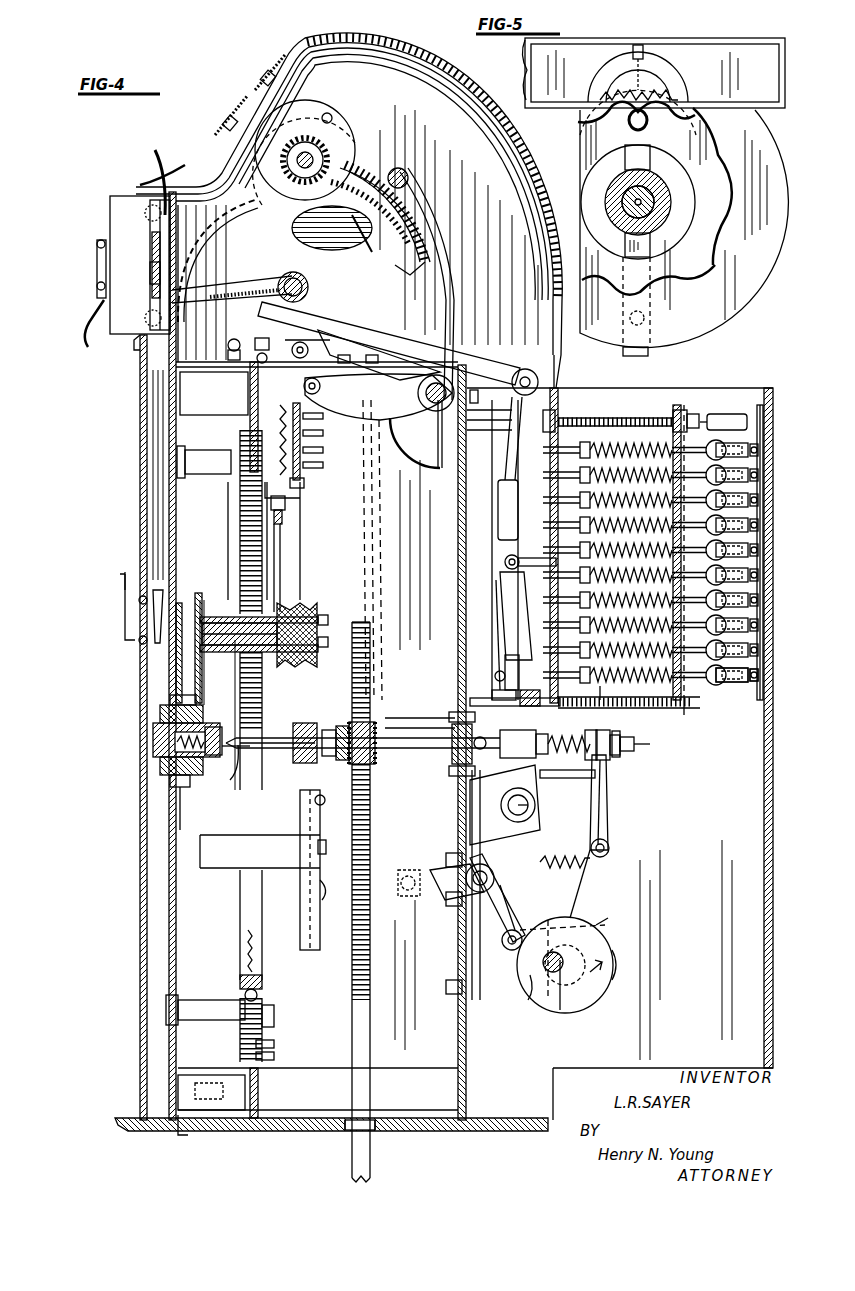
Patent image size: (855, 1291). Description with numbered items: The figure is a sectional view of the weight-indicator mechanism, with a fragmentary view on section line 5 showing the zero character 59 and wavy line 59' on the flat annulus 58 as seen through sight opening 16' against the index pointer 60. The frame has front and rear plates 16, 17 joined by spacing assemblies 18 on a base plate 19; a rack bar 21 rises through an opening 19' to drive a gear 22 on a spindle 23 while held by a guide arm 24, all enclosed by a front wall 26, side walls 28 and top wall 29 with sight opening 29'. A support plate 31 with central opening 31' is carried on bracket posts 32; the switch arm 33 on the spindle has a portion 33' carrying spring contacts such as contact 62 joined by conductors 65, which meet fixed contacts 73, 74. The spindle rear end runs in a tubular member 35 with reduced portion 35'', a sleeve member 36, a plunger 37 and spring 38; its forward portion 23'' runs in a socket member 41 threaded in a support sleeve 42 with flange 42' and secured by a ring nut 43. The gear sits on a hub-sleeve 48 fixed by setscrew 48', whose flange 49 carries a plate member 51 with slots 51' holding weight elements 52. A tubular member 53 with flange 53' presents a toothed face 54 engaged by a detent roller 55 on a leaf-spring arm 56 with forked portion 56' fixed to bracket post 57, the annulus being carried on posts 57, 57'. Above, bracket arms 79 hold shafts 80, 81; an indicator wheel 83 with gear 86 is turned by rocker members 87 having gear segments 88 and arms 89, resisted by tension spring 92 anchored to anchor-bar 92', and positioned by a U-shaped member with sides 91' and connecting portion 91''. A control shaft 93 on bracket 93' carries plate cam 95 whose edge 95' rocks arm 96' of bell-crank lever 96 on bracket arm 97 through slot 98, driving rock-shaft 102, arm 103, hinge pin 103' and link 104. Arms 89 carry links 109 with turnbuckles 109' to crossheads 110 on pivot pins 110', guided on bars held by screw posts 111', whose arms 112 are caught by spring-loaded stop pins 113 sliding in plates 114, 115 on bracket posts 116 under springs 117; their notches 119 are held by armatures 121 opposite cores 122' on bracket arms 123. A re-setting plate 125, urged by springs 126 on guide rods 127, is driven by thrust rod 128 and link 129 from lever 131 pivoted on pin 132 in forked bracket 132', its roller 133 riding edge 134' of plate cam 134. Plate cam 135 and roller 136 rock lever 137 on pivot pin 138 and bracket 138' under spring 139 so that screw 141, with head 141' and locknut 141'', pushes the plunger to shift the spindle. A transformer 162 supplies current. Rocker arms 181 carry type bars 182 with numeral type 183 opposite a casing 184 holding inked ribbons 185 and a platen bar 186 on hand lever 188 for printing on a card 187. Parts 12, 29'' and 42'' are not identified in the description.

In FIG. 4, the section line 5— 5 is at (123, 576).
In FIG. 4, the main shaft 12 is at (135, 742).
In FIG. 4, the front frame plate 16 is at (134, 656).
In FIG. 5, the front frame plate 16 is at (653, 60).
In FIG. 4, the sight opening 16' is at (136, 646).
In FIG. 4, the rear frame plate 17 is at (458, 1050).
In FIG. 4, the spacing assemblies 18 is at (224, 403).
In FIG. 4, the base plate 19 is at (331, 1142).
In FIG. 4, the opening of the base plate 19' is at (341, 1143).
In FIG. 4, the rack bar 21 is at (362, 890).
In FIG. 4, the gear 22 is at (371, 902).
In FIG. 4, the spindle 23 is at (448, 756).
In FIG. 4, the reduced forward portion of the spindle 23'' is at (230, 772).
In FIG. 4, the guide arm 24 is at (422, 726).
In FIG. 4, the front wall 26 is at (140, 660).
In FIG. 5, the front wall 26 is at (764, 59).
In FIG. 4, the side walls 28 is at (710, 839).
In FIG. 4, the top wall 29 is at (349, 206).
In FIG. 4, the sight opening 29' is at (220, 113).
In FIG. 4, the cover fastening 29'' is at (264, 68).
In FIG. 4, the support plate 31 is at (214, 1136).
In FIG. 4, the central opening of the support plate 31' is at (220, 951).
In FIG. 4, the bracket posts 32 is at (216, 469).
In FIG. 4, the switch arm 33 is at (290, 622).
In FIG. 5, the switch arm 33 is at (638, 202).
In FIG. 4, the portion of the switch arm 33' is at (306, 485).
In FIG. 4, the tubular member 35 is at (447, 744).
In FIG. 4, the reduced rearward portion of the tubular member 35'' is at (483, 728).
In FIG. 4, the sleeve member 36 is at (510, 730).
In FIG. 4, the plunger 37 is at (601, 752).
In FIG. 4, the helical compression spring 38 is at (569, 759).
In FIG. 4, the socket member 41 is at (153, 745).
In FIG. 5, the socket member 41 is at (633, 205).
In FIG. 4, the support sleeve 42 is at (154, 739).
In FIG. 5, the support sleeve 42 is at (648, 286).
In FIG. 4, the radial flange 42' is at (144, 808).
In FIG. 4, the flange 42'' is at (146, 790).
In FIG. 4, the ring nut 43 is at (215, 726).
In FIG. 4, the hub-sleeve 48 is at (355, 726).
In FIG. 4, the setscrew 48' is at (339, 755).
In FIG. 4, the annular flange 49 is at (328, 728).
In FIG. 4, the plate member 51 is at (333, 894).
In FIG. 4, the slots 51' is at (331, 853).
In FIG. 4, the balancing weight elements 52 is at (323, 870).
In FIG. 4, the tubular member 53 is at (226, 925).
In FIG. 4, the radial flange portion 53' is at (226, 988).
In FIG. 4, the toothed annular rear face 54 is at (270, 992).
In FIG. 4, the detent roller 55 is at (290, 505).
In FIG. 4, the leaf-spring arm 56 is at (310, 568).
In FIG. 4, the offset forked terminal portion 56' is at (311, 519).
In FIG. 4, the bracket post 57 is at (264, 617).
In FIG. 4, the bracket post 57' is at (260, 851).
In FIG. 5, the bracket post 57' is at (668, 333).
In FIG. 4, the flat annulus 58 is at (200, 590).
In FIG. 5, the flat annulus 58 is at (755, 273).
In FIG. 5, the zero character 59 is at (638, 93).
In FIG. 5, the wavy line 59' is at (723, 186).
In FIG. 4, the index pointer 60 is at (172, 626).
In FIG. 5, the index pointer 60 is at (580, 118).
In FIG. 4, the spring-pressed electrical contact 62 is at (305, 441).
In FIG. 4, the flexible wire conductors 65 is at (304, 480).
In FIG. 4, the contacts 73 is at (274, 1044).
In FIG. 4, the contacts 74 is at (274, 1056).
In FIG. 4, the bracket arms 79 is at (380, 176).
In FIG. 4, the support shaft 80 is at (352, 128).
In FIG. 4, the support shaft 81 is at (272, 278).
In FIG. 4, the indicator wheel 83 is at (332, 112).
In FIG. 4, the gears 86 is at (315, 135).
In FIG. 4, the rocker members 87 is at (400, 310).
In FIG. 4, the gear segments 88 is at (368, 213).
In FIG. 4, the rearwardly-directed arms 89 is at (421, 284).
In FIG. 4, the sides of the U-shaped member 91' is at (350, 368).
In FIG. 4, the side-connecting portion 91'' is at (379, 368).
In FIG. 4, the tension spring 92 is at (234, 341).
In FIG. 4, the anchor-bar 92' is at (269, 348).
In FIG. 4, the control shaft 93 is at (572, 1000).
In FIG. 4, the bracket 93' is at (512, 1007).
In FIG. 4, the plate cam 95 is at (567, 973).
In FIG. 4, the camming edge 95' is at (628, 978).
In FIG. 4, the bell-crank lever 96 is at (453, 899).
In FIG. 4, the depending arm 96' is at (469, 929).
In FIG. 4, the bracket arm 97 is at (448, 892).
In FIG. 4, the slot 98 is at (448, 853).
In FIG. 4, the rock-shaft 102 is at (416, 437).
In FIG. 4, the arm 103 is at (379, 515).
In FIG. 4, the hinge pin 103' is at (360, 397).
In FIG. 4, the link 104 is at (312, 345).
In FIG. 4, the links 109 is at (498, 445).
In FIG. 4, the turnbuckle 109' is at (493, 510).
In FIG. 4, the crosshead 110 is at (482, 635).
In FIG. 4, the pivot pin 110' is at (490, 653).
In FIG. 4, the screw posts 111' is at (487, 678).
In FIG. 4, the arm 112 is at (515, 693).
In FIG. 4, the stop pin members 113 is at (708, 710).
In FIG. 4, the plate member 114 is at (568, 529).
In FIG. 4, the plate member 115 is at (700, 706).
In FIG. 4, the bracket posts 116 is at (496, 470).
In FIG. 4, the helical compression springs 117 is at (630, 689).
In FIG. 4, the notches 119 is at (730, 432).
In FIG. 4, the swinging armatures 121 is at (750, 690).
In FIG. 4, the cores 122' is at (730, 718).
In FIG. 4, the bracket arms 123 is at (752, 712).
In FIG. 4, the re-setting plate 125 is at (608, 408).
In FIG. 4, the helical compression springs 126 is at (624, 418).
In FIG. 4, the guide rods 127 is at (670, 411).
In FIG. 4, the thrust rod 128 is at (532, 566).
In FIG. 4, the link 129 is at (516, 556).
In FIG. 4, the lever 131 is at (500, 580).
In FIG. 4, the pin 132 is at (507, 805).
In FIG. 4, the forked bracket 132' is at (548, 795).
In FIG. 4, the roller 133 is at (505, 948).
In FIG. 4, the plate cam 134 is at (543, 916).
In FIG. 4, the eccentric camming edge 134' is at (567, 884).
In FIG. 4, the plate cam 135 is at (605, 928).
In FIG. 4, the roller 136 is at (604, 948).
In FIG. 4, the lever 137 is at (616, 825).
In FIG. 4, the pivot pin 138 is at (616, 854).
In FIG. 4, the bracket 138' is at (567, 794).
In FIG. 4, the tension spring 139 is at (562, 870).
In FIG. 4, the member 141 is at (650, 756).
In FIG. 4, the head 141' is at (605, 735).
In FIG. 4, the locknut 141'' is at (638, 765).
In FIG. 4, the transformer 162 is at (332, 228).
In FIG. 4, the arms 181 is at (212, 341).
In FIG. 4, the type bars 182 is at (218, 261).
In FIG. 4, the numeral type 183 is at (197, 195).
In FIG. 4, the casing 184 is at (119, 265).
In FIG. 4, the inked ribbons 185 is at (160, 255).
In FIG. 4, the platen bar 186 is at (148, 276).
In FIG. 4, the card or strip of paper 187 is at (160, 160).
In FIG. 4, the lever 188 is at (95, 305).